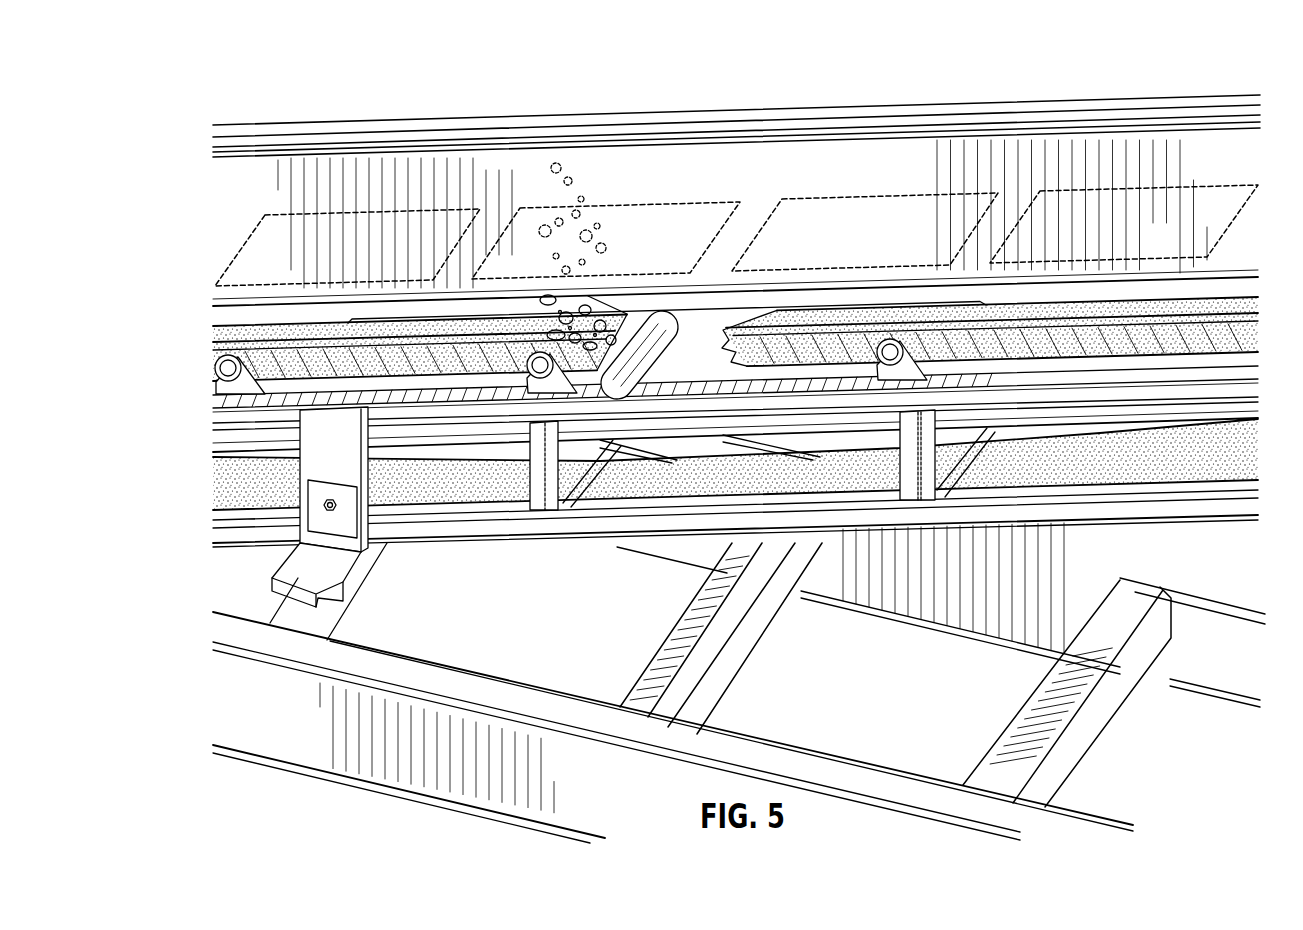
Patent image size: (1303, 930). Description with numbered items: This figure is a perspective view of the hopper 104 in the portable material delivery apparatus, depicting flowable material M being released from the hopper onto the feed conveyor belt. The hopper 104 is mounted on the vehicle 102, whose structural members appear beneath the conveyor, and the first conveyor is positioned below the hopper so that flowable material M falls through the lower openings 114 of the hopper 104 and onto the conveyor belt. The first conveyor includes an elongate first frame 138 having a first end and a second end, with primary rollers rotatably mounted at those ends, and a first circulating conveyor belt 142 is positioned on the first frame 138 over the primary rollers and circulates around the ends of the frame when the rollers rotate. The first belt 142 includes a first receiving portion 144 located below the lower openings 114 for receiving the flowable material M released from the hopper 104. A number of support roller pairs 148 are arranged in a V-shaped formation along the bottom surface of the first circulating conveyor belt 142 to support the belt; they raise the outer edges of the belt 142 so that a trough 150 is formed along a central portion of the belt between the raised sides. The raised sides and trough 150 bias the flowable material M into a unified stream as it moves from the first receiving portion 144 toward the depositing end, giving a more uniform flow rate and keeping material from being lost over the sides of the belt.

The vehicle 102 is at (870, 783).
The hopper 104 is at (277, 145).
The lower openings 114 is at (793, 224).
The first frame 138 is at (578, 523).
The first circulating conveyor belt 142 is at (1082, 327).
The first receiving portion 144 is at (650, 300).
The support roller pairs 148 is at (228, 368).
The trough 150 is at (600, 313).
The flowable material M is at (537, 317).